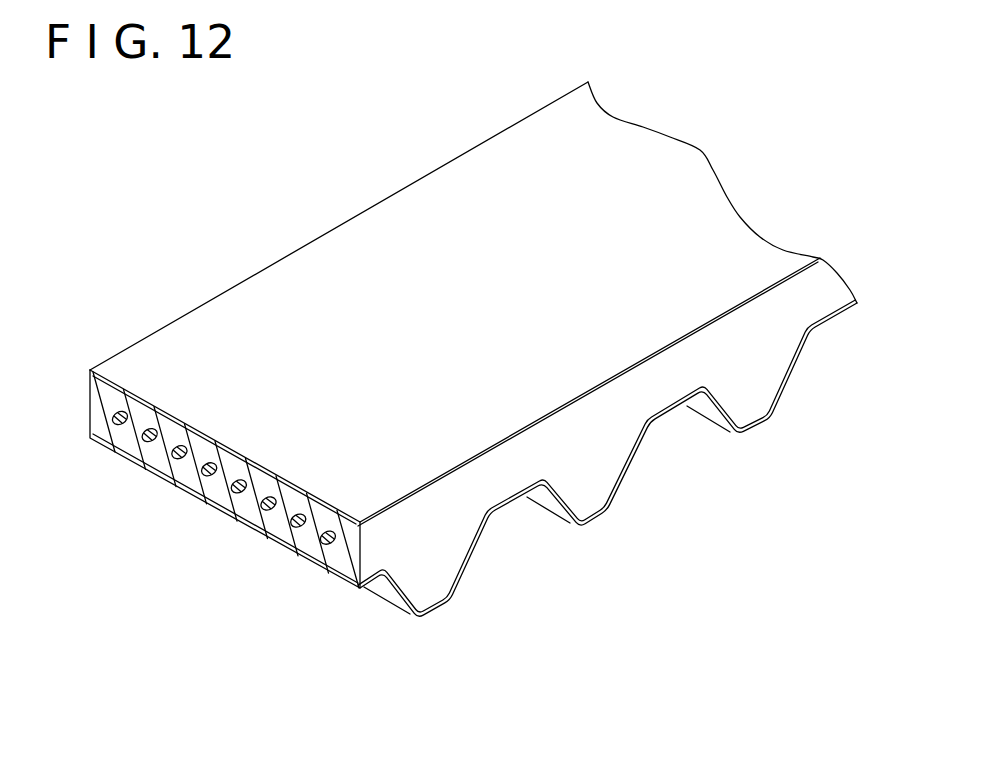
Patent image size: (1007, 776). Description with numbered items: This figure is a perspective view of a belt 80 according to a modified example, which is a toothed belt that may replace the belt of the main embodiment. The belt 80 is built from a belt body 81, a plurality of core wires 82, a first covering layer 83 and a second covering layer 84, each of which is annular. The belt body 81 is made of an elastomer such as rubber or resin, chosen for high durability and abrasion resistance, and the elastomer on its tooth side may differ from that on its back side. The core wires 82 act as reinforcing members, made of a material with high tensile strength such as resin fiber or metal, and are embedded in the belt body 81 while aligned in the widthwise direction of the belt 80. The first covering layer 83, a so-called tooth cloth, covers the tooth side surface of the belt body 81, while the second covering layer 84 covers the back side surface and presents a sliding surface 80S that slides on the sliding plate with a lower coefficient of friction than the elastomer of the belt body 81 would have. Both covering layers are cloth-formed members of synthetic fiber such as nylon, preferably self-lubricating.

The belt 80 is at (473, 383).
The sliding surface 80S is at (320, 272).
The belt body 81 is at (591, 498).
The core wire 82 is at (312, 540).
The first covering layer 83 is at (438, 614).
The second covering layer 84 is at (438, 475).